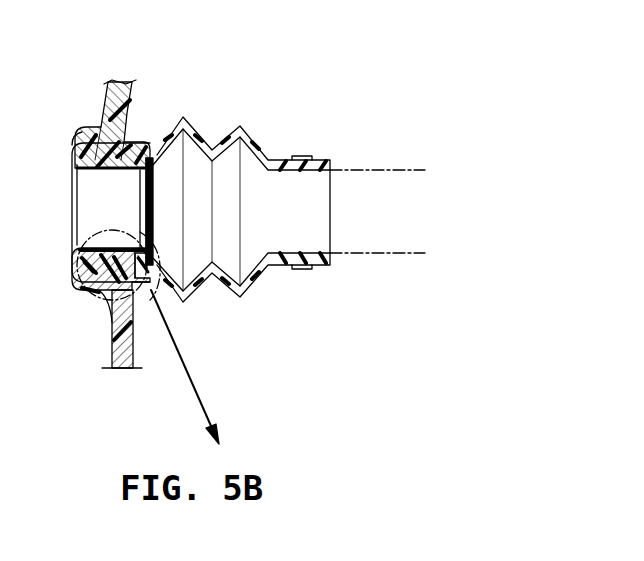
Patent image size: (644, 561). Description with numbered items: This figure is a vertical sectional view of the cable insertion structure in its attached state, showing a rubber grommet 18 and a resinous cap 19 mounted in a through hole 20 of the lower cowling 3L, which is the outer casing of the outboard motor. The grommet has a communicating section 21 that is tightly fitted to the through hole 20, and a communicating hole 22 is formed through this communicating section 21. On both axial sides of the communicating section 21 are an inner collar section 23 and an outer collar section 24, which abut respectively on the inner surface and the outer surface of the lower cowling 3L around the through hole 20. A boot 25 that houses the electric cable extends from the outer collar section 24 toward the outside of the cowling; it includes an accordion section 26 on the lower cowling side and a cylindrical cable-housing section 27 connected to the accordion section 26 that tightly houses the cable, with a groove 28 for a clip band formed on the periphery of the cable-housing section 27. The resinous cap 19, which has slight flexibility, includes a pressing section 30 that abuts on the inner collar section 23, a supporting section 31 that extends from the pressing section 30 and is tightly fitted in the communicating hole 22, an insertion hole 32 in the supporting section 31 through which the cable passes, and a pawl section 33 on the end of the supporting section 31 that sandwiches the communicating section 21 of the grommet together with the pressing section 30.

The lower cowling 3L is at (112, 351).
The rubber grommet 18 is at (322, 265).
The resinous cap 19 is at (72, 157).
The through hole 20 is at (103, 150).
The communicating section 21 is at (108, 287).
The communicating hole 22 is at (103, 235).
The inner collar section 23 is at (92, 277).
The outer collar section 24 is at (130, 292).
The boot 25 is at (330, 58).
The accordion section 26 is at (218, 126).
The cylindrical cable-housing section 27 is at (305, 128).
The groove 28 is at (305, 160).
The pressing section 30 is at (74, 151).
The supporting section 31 is at (76, 265).
The insertion hole 32 is at (100, 176).
The pawl section 33 is at (150, 162).